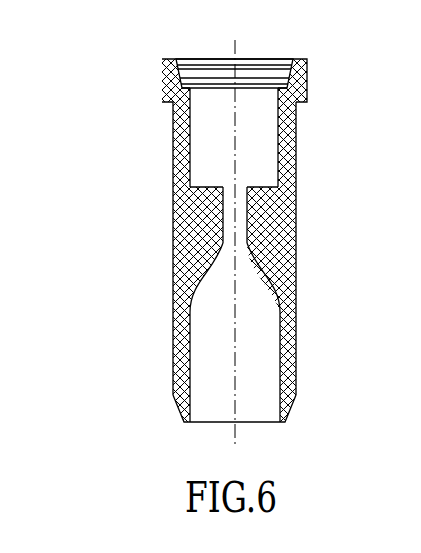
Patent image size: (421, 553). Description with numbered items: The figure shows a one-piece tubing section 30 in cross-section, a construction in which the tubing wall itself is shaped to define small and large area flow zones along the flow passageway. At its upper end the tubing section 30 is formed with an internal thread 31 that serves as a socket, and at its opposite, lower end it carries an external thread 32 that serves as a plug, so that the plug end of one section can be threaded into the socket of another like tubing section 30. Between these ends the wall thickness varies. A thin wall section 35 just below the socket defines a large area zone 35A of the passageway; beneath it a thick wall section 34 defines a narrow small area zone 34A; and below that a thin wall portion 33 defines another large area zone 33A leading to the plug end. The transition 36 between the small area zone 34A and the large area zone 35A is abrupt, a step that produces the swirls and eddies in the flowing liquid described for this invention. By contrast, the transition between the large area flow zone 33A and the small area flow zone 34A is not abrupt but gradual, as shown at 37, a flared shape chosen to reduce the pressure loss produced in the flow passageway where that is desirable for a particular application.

The tubing section 30 is at (106, 106).
The internal thread 31 is at (223, 70).
The external thread 32 is at (177, 408).
The thin wall portion 33 is at (182, 373).
The large area zone 33A is at (203, 333).
The thick wall section 34 is at (202, 260).
The small area zone 34A is at (228, 224).
The thin wall section 35 is at (178, 130).
The large area zone 35A is at (210, 152).
The transition 36 is at (262, 185).
The gradual transition 37 is at (270, 287).